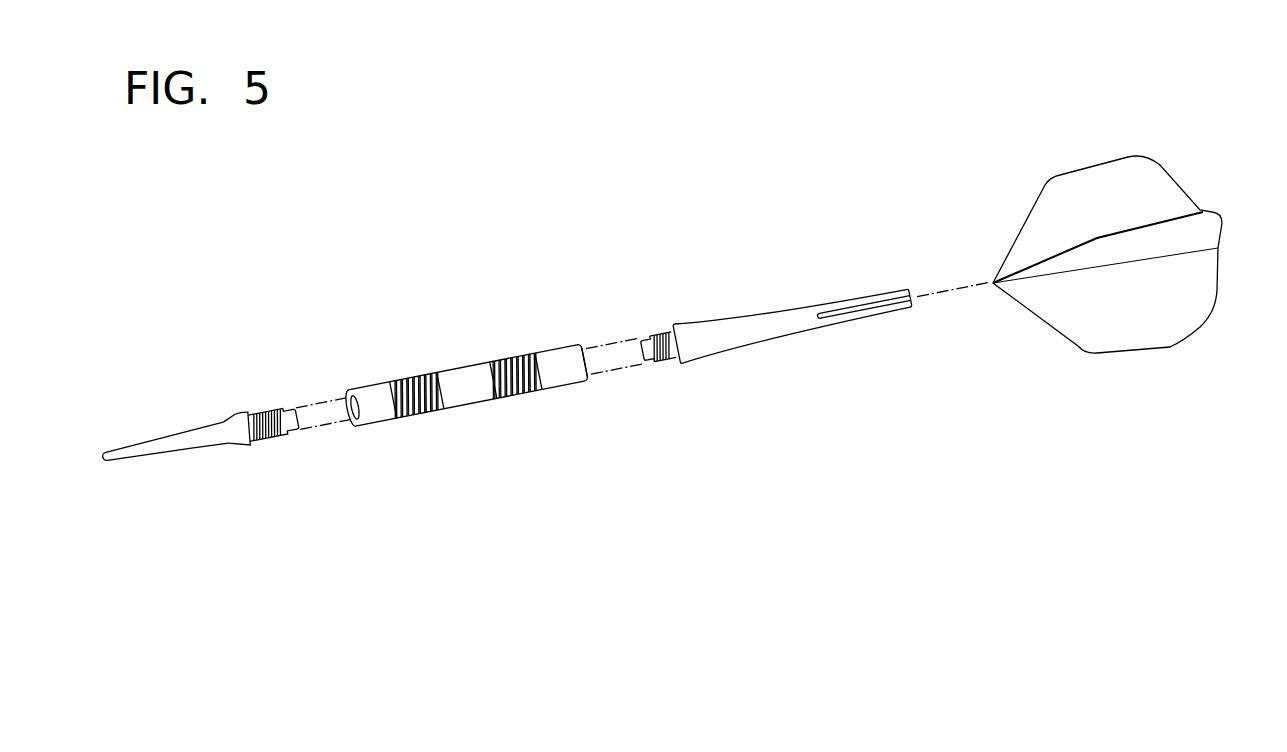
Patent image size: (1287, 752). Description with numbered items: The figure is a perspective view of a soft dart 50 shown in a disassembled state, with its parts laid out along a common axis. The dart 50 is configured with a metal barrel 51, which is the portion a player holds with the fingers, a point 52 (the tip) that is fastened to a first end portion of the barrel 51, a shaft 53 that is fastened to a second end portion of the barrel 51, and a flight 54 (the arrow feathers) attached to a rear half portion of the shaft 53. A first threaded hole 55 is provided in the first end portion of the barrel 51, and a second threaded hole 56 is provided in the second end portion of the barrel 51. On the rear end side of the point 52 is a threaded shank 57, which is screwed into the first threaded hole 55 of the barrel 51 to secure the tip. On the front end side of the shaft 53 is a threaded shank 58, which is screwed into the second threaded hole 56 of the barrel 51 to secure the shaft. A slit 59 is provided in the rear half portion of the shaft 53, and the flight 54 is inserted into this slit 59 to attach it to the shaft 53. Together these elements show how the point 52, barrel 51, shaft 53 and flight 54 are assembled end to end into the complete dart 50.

The dart 50 is at (845, 178).
The metal barrel 51 is at (466, 385).
The point 52 is at (177, 442).
The shaft 53 is at (793, 320).
The flight 54 is at (1147, 330).
The first threaded hole 55 is at (355, 407).
The second threaded hole 56 is at (585, 362).
The threaded shank 57 is at (272, 423).
The threaded shank 58 is at (658, 348).
The slit 59 is at (864, 307).